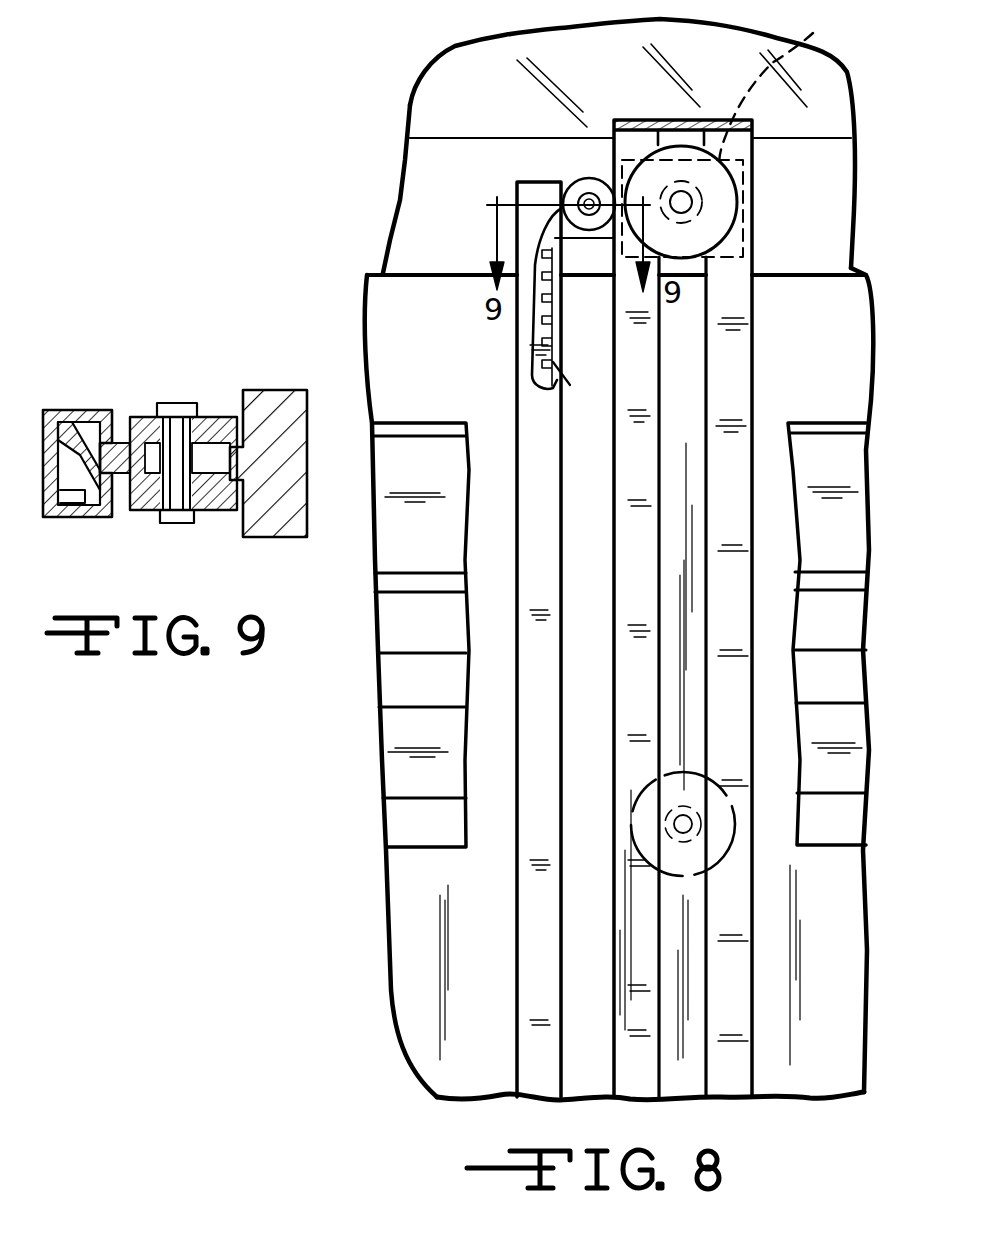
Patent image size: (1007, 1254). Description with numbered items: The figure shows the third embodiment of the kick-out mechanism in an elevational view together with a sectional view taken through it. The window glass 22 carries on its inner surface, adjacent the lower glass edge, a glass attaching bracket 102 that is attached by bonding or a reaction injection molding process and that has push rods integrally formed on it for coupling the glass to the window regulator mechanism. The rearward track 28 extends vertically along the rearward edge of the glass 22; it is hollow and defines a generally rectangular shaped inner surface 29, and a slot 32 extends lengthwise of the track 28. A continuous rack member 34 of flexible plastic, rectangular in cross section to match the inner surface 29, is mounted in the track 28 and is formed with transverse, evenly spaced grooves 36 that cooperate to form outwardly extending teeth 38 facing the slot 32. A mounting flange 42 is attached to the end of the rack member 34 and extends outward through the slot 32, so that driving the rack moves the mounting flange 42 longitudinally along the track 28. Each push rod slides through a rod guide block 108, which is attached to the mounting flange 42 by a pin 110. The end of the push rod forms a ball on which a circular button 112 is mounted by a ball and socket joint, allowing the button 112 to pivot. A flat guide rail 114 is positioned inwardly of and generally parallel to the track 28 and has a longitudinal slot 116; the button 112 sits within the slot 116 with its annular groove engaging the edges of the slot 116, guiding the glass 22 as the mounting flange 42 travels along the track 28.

In FIG. 8, the glass 22 is at (420, 110).
In FIG. 8, the glass attaching bracket 102 is at (420, 191).
In FIG. 8, the rearward track 28 is at (517, 410).
In FIG. 9, the rearward track 28 is at (37, 420).
In FIG. 9, the inner surface 29 is at (86, 500).
In FIG. 8, the mounting flange 42 is at (567, 188).
In FIG. 9, the mounting flange 42 is at (100, 437).
In FIG. 9, the slot 32 is at (115, 440).
In FIG. 8, the rack member 34 is at (545, 300).
In FIG. 8, the grooves 36 is at (566, 382).
In FIG. 8, the teeth 38 is at (556, 318).
In FIG. 8, the rod guide block 108 is at (808, 42).
In FIG. 9, the rod guide block 108 is at (277, 540).
In FIG. 9, the pin 110 is at (183, 407).
In FIG. 8, the circular button 112 is at (744, 240).
In FIG. 8, the guide rail 114 is at (735, 352).
In FIG. 8, the longitudinal slot 116 is at (700, 400).